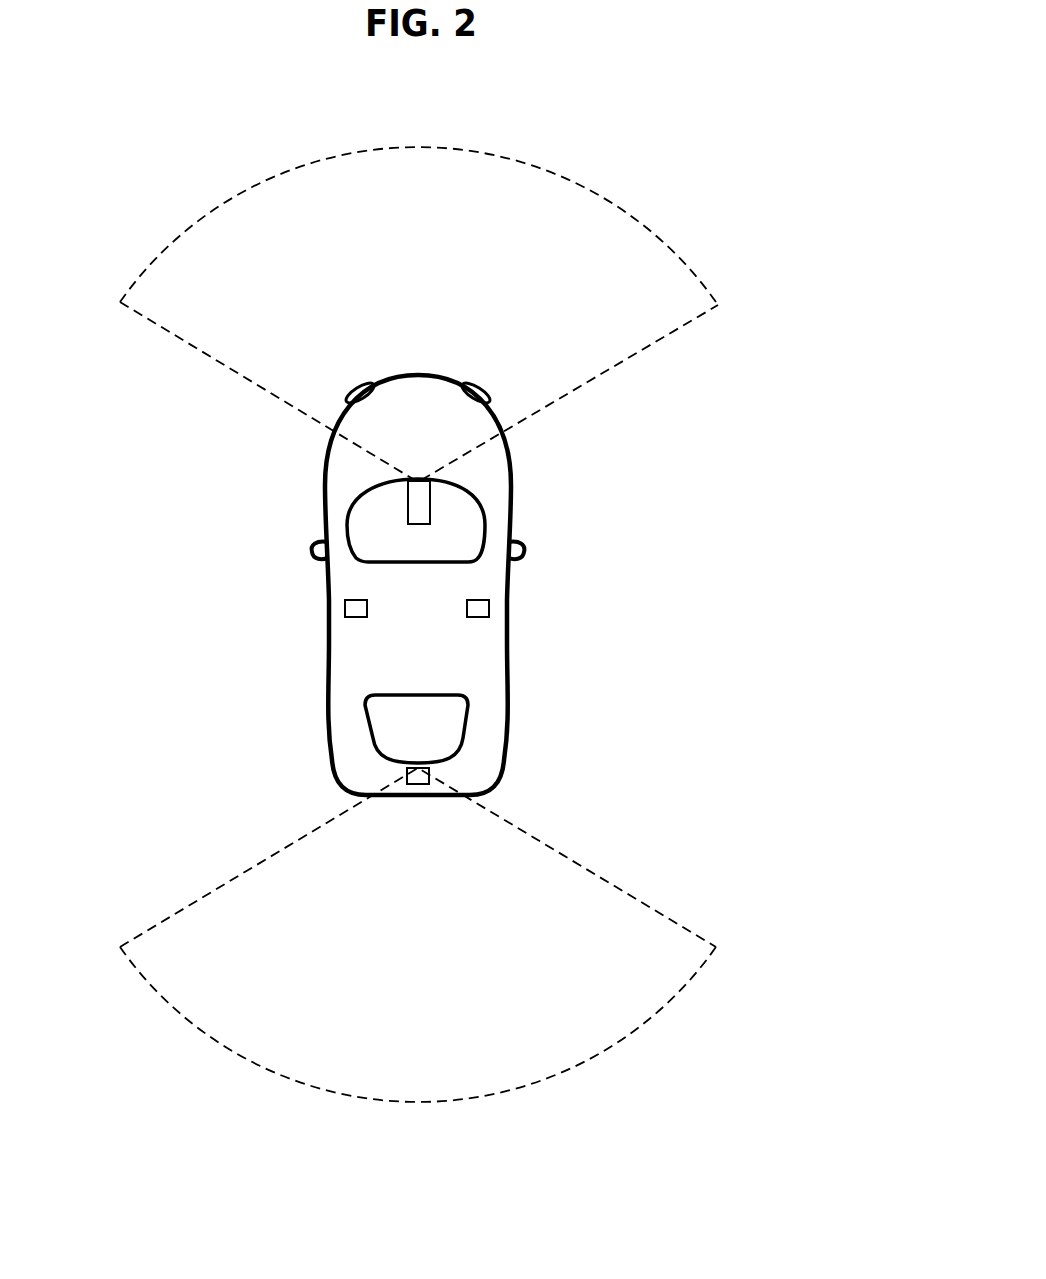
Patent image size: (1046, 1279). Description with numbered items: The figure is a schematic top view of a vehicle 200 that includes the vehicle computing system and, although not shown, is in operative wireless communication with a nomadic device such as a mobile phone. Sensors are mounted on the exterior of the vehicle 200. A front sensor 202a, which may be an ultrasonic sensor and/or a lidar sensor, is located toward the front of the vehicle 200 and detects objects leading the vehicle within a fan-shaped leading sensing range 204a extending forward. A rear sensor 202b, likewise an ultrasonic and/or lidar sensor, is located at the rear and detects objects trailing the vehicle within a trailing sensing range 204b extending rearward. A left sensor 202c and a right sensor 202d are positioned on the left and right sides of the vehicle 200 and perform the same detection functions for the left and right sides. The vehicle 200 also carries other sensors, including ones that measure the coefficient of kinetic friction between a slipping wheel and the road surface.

The vehicle 200 is at (765, 135).
The sensor 202a is at (418, 507).
The sensor 202b is at (418, 779).
The left sensor 202c is at (355, 605).
The right sensor 202d is at (481, 605).
The leading sensing range 204a is at (692, 320).
The trailing sensing range 204b is at (693, 932).